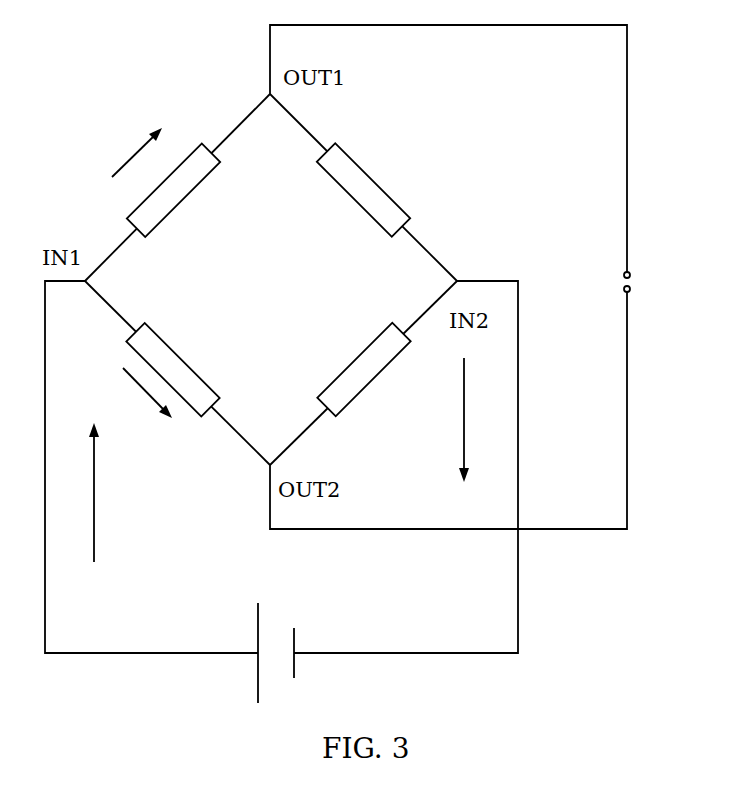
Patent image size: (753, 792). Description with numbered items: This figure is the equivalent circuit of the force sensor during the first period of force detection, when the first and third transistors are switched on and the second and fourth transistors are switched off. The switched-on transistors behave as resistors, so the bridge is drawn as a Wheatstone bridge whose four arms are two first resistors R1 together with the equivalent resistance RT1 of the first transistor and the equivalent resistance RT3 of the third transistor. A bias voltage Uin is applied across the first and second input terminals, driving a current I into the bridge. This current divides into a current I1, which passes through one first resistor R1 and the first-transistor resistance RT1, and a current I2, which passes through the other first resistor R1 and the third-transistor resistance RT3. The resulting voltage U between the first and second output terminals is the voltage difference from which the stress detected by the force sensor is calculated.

The first resistor R1 is at (176, 280).
The equivalent resistance of the first transistor RT1 is at (361, 189).
The equivalent resistance of the third transistor RT3 is at (361, 369).
The bias voltage Uin is at (248, 653).
The voltage U is at (651, 281).
The current I is at (279, 460).
The current through the first resistor and the first transistor I1 is at (136, 152).
The current through the first resistor and the third transistor I2 is at (147, 395).